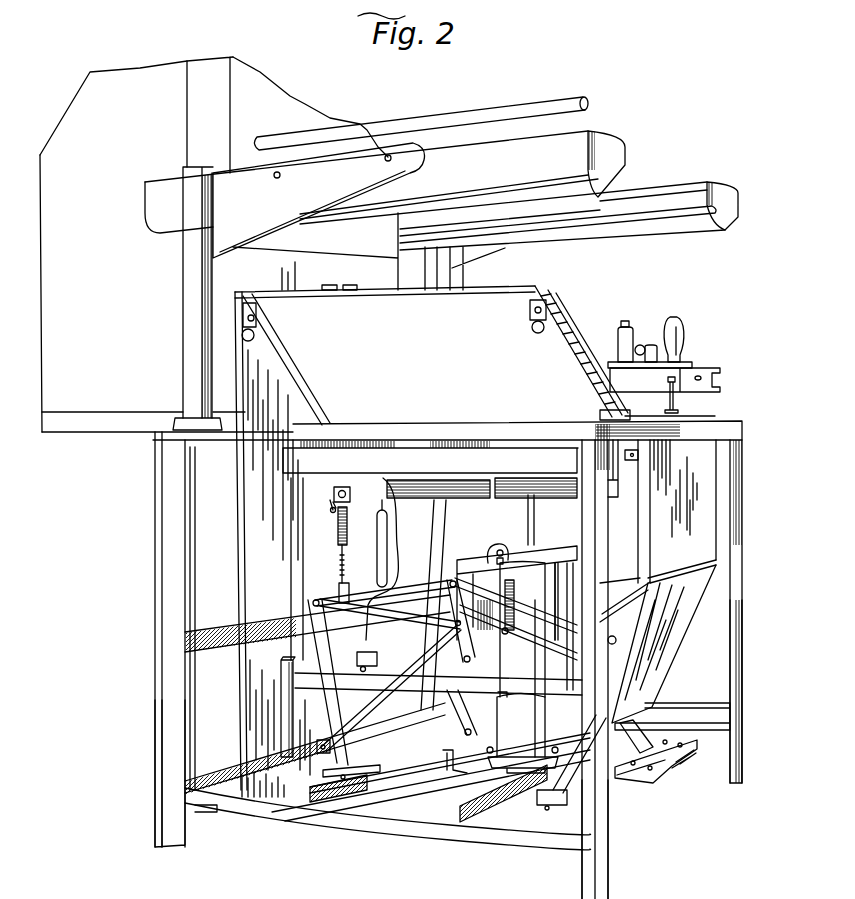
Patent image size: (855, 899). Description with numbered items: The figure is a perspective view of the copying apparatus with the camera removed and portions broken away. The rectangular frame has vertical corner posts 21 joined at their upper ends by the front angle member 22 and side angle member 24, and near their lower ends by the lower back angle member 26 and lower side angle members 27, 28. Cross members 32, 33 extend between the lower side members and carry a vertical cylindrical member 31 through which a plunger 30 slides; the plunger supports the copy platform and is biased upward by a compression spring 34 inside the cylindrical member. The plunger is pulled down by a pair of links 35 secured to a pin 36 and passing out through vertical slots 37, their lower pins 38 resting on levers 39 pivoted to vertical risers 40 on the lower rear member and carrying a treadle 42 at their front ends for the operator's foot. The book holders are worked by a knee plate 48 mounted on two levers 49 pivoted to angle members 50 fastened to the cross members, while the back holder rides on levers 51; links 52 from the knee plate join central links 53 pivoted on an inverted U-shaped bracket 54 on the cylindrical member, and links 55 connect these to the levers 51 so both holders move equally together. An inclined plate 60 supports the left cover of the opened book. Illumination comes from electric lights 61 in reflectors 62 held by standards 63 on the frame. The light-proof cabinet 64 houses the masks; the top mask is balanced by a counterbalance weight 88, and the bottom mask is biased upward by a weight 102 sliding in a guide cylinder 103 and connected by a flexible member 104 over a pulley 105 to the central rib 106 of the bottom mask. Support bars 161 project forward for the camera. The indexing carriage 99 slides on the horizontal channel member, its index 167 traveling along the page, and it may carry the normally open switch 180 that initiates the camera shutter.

The vertical corner posts 21 is at (168, 815).
The front angle member 22 is at (725, 432).
The side angle member 24 is at (175, 445).
The lower back angle member 26 is at (230, 795).
The lower side angle member 27 is at (388, 830).
The lower side angle member 28 is at (722, 728).
The plunger 30 is at (535, 522).
The vertical cylindrical member 31 is at (515, 758).
The cross member 32 is at (353, 807).
The cross member 33 is at (498, 812).
The compression spring 34 is at (510, 570).
The links 35 is at (552, 657).
The pin 36 is at (515, 600).
The vertical slots 37 is at (490, 550).
The pins 38 is at (500, 708).
The levers 39 is at (412, 690).
The vertical risers 40 is at (283, 678).
The treadle 42 is at (665, 765).
The knee plate 48 is at (670, 655).
The levers 49 is at (568, 805).
The angle members 50 is at (440, 792).
The levers 51 is at (291, 505).
The links 52 is at (610, 578).
The central links 53 is at (466, 640).
The inverted U-shaped bracket 54 is at (500, 550).
The links 55 is at (310, 600).
The inclined plate 60 is at (500, 300).
The electric lights 61 is at (672, 228).
The reflectors 62 is at (597, 148).
The standards 63 is at (187, 376).
The cabinet 64 is at (90, 209).
The counterbalance weight 88 is at (377, 550).
The indexing carriage 99 is at (702, 395).
The weight 102 is at (339, 592).
The guide cylinder 103 is at (338, 530).
The flexible member 104 is at (330, 503).
The pulley 105 is at (344, 487).
The central rib 106 is at (298, 448).
The support bars 161 is at (457, 105).
The index 167 is at (665, 410).
The switch 180 is at (640, 345).